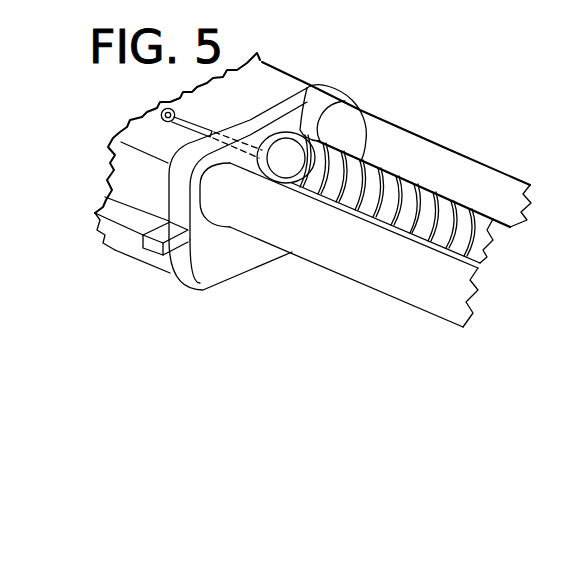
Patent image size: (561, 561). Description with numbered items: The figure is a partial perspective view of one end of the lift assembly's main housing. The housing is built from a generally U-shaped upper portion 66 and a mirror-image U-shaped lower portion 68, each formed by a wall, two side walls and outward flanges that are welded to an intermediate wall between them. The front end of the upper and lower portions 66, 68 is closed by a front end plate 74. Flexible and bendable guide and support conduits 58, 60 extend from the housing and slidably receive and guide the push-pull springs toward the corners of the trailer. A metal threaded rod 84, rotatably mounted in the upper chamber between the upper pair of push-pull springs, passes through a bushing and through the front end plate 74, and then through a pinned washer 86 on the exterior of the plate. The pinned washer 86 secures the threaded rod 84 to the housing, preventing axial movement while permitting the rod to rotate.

The guide and support conduit 58 is at (330, 270).
The guide and support conduit 60 is at (392, 120).
The upper portion 66 is at (260, 82).
The lower portion 68 is at (157, 263).
The front end plate 74 is at (232, 262).
The threaded rod 84 is at (450, 227).
The pinned washer 86 is at (308, 88).